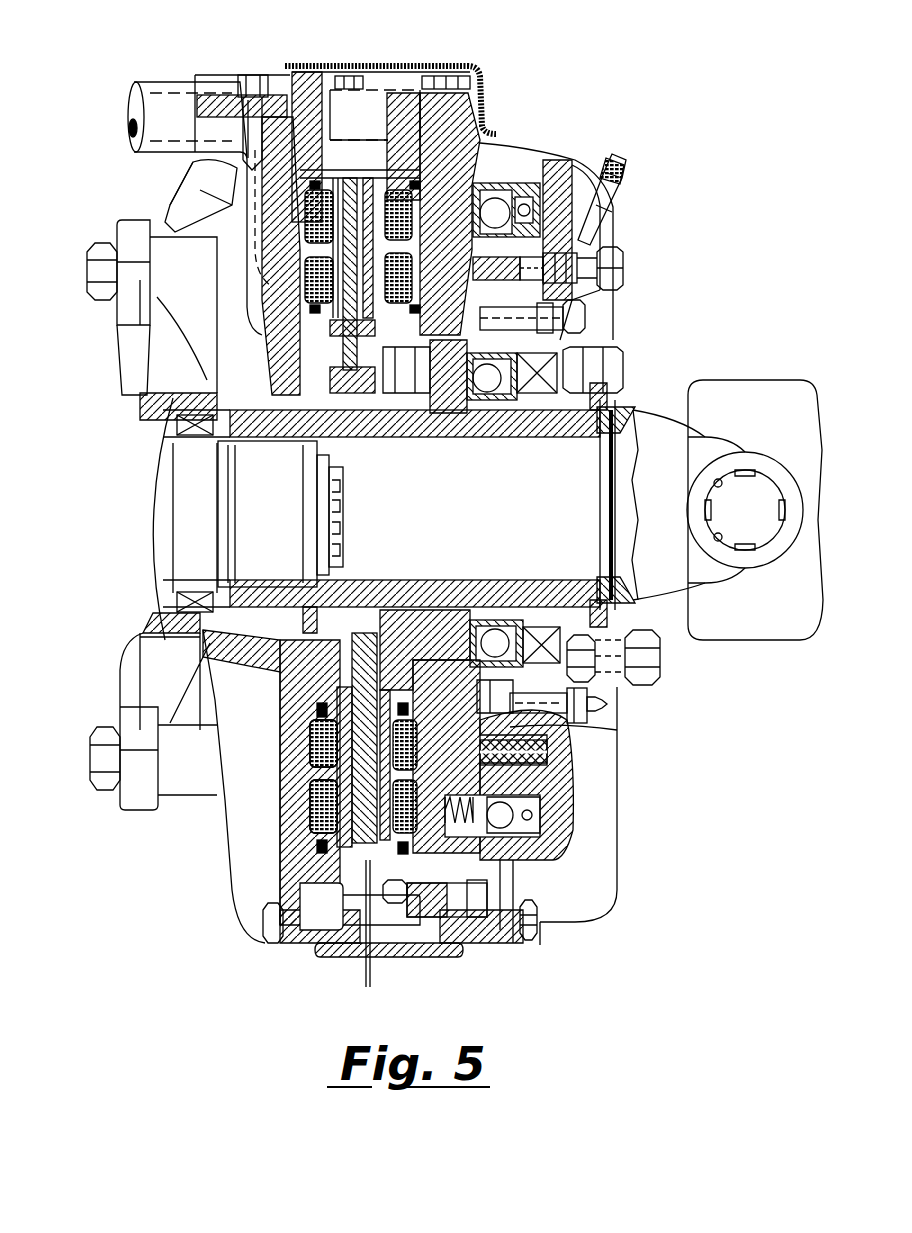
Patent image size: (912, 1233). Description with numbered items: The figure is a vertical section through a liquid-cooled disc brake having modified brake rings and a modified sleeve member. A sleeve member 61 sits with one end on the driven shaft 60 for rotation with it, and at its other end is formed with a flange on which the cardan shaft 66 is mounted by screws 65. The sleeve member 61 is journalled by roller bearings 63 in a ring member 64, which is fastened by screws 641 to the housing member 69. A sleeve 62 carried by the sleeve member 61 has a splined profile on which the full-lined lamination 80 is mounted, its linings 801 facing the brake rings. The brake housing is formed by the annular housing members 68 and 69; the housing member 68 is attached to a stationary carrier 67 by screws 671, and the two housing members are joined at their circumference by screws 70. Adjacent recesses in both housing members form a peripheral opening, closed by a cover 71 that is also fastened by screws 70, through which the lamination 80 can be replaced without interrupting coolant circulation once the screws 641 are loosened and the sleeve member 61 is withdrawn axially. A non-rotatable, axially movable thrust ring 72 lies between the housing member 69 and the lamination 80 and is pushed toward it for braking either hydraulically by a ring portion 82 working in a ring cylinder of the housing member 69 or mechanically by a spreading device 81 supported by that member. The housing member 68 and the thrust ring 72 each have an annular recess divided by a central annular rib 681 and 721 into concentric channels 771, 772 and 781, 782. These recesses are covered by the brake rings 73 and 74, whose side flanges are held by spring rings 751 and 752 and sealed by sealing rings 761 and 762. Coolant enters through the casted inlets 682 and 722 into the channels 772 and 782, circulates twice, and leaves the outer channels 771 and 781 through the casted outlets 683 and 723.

The driven shaft 60 is at (193, 524).
The sleeve member 61 is at (348, 428).
The sleeve 62 is at (415, 420).
The roller bearings 63 is at (485, 410).
The ring member 64 is at (535, 400).
The screws 641 is at (560, 310).
The screws 65 is at (643, 655).
The cardan shaft 66 is at (750, 412).
The stationary carrier 67 is at (133, 705).
The screws 671 is at (97, 275).
The housing member 68 is at (283, 135).
The central annular rib 681 is at (330, 772).
The casted inlet 682 is at (300, 295).
The casted outlet 683 is at (280, 200).
The housing member 69 is at (600, 163).
The screws 70 is at (530, 930).
The cover 71 is at (430, 947).
The thrust ring 72 is at (575, 737).
The central annular rib 721 is at (500, 760).
The casted inlet 722 is at (560, 290).
The casted outlet 723 is at (613, 242).
The brake ring 73 is at (313, 772).
The brake ring 74 is at (560, 773).
The spring ring 751 is at (398, 700).
The spring ring 752 is at (327, 853).
The sealing ring 761 is at (435, 640).
The sealing ring 762 is at (323, 848).
The channel 771 is at (325, 222).
The channel 772 is at (318, 290).
The channel 781 is at (485, 175).
The channel 782 is at (500, 195).
The lamination 80 is at (360, 660).
The linings 801 is at (368, 880).
The spreading device 81 is at (543, 180).
The ring portion 82 is at (615, 265).